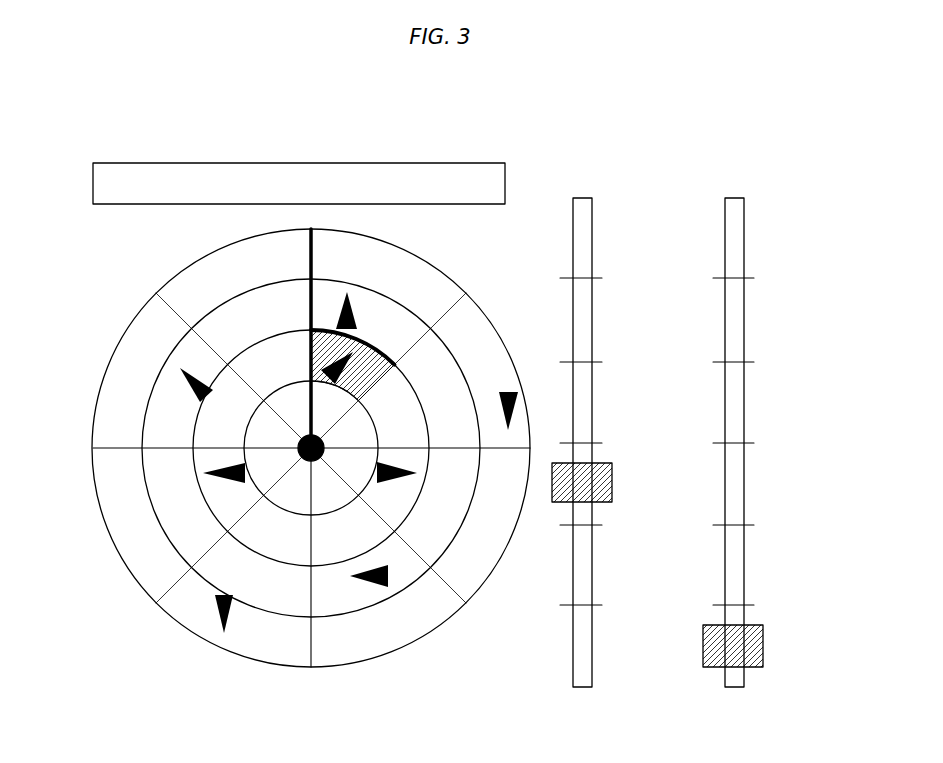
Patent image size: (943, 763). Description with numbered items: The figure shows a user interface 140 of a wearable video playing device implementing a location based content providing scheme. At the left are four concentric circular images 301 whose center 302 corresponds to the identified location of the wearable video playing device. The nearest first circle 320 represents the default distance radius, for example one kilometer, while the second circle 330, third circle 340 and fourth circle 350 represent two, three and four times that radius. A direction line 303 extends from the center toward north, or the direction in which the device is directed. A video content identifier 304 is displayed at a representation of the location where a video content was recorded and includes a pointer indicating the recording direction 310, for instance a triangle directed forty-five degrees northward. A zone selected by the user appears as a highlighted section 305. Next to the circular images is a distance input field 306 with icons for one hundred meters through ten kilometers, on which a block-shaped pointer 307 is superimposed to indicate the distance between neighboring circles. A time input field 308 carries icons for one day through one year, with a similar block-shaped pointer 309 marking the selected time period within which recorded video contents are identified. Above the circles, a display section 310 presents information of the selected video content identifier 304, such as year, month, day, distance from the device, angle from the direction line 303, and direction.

The user interface 140 is at (457, 98).
The concentric circular images 301 is at (122, 333).
The center of the concentric circular images 302 is at (310, 448).
The direction line 303 is at (311, 300).
The video content identifier 304 is at (362, 350).
The highlighted section 305 is at (413, 380).
The distance input field 306 is at (583, 207).
The block-shaped pointer 307 is at (595, 478).
The time input field 308 is at (735, 207).
The time slider knob 309 is at (755, 640).
The display section 310 is at (297, 163).
The first circle 320 is at (247, 430).
The second circle 330 is at (237, 357).
The third circle 340 is at (227, 297).
The fourth circle 350 is at (223, 247).